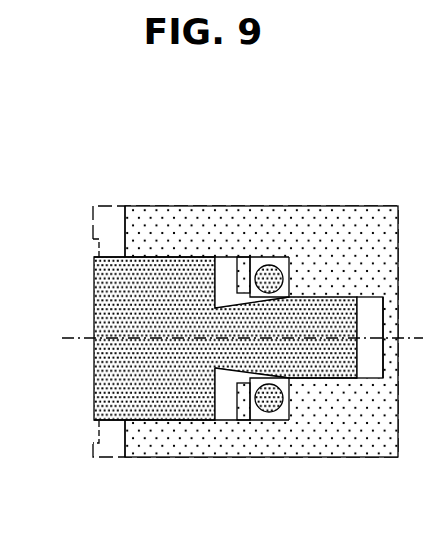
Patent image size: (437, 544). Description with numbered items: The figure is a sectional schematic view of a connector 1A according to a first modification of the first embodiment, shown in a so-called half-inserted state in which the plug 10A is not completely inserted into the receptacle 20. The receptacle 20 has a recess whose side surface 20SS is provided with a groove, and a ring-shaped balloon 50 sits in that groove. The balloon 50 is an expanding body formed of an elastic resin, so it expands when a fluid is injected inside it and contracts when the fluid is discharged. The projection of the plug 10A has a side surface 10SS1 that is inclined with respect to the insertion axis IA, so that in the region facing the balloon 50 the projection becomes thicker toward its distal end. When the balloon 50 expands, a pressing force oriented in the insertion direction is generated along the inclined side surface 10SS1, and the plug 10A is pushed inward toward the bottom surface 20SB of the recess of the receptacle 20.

The connector 1A is at (62, 202).
The plug 10A is at (183, 256).
The receptacle 20 is at (348, 206).
The balloon 50 is at (271, 264).
The bottom surface 20SB is at (372, 315).
The side surface 10SS1 is at (247, 388).
The side surface 20SS is at (302, 370).
The insertion axis IA is at (225, 340).